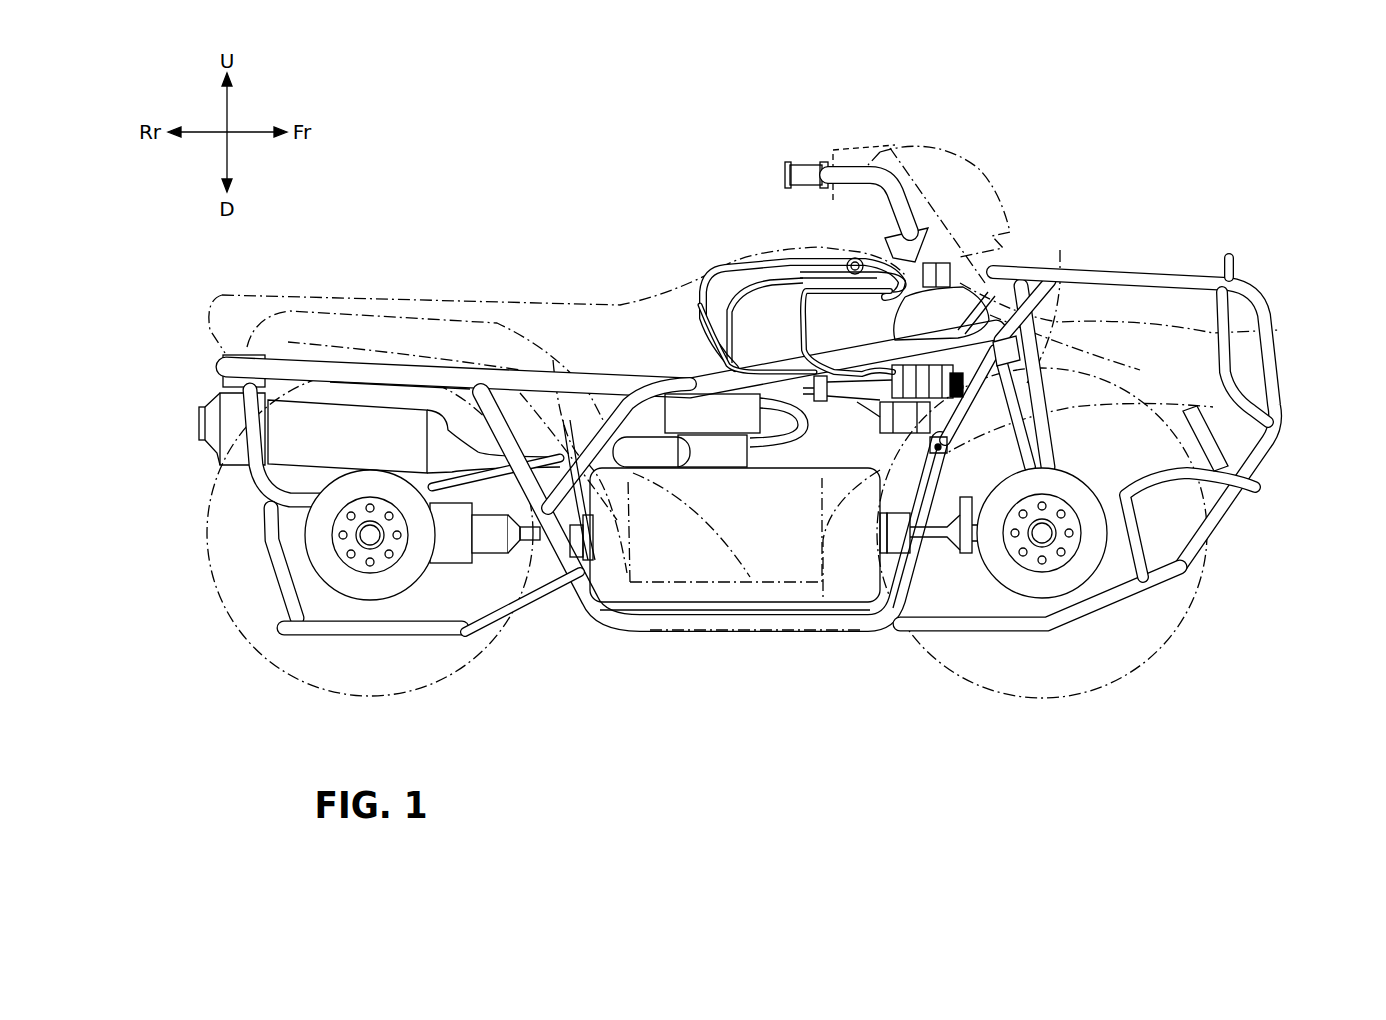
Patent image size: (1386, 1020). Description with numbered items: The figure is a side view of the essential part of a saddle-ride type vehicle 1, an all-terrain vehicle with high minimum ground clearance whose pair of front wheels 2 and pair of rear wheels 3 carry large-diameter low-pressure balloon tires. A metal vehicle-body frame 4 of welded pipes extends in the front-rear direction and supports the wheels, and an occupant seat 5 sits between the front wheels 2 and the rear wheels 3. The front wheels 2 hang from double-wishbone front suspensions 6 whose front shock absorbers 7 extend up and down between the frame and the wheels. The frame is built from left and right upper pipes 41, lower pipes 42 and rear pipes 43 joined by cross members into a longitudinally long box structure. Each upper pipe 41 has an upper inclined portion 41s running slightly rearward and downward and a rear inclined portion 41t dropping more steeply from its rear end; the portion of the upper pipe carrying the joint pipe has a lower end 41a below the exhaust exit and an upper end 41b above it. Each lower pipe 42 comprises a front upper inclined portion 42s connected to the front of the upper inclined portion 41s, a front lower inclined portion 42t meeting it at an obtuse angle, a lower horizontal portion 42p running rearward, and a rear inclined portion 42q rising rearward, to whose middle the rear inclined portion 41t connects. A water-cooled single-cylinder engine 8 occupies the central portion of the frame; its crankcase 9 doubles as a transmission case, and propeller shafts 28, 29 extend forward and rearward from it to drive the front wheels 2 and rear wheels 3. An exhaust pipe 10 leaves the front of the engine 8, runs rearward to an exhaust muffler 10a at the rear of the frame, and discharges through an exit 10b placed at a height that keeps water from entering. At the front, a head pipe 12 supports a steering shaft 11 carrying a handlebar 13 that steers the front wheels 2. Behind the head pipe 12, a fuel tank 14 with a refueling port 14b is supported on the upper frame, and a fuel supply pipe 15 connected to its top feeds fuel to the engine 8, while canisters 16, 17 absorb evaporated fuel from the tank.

The saddle-ride type vehicle 1 is at (1131, 142).
The front wheels 2 is at (1163, 643).
The rear wheels 3 is at (226, 606).
The vehicle-body frame 4 is at (606, 368).
The occupant seat 5 is at (473, 300).
The front suspensions 6 is at (1058, 447).
The front shock absorbers 7 is at (1040, 415).
The engine 8 is at (775, 530).
The crankcase 9 is at (803, 600).
The exhaust pipe 10 is at (530, 456).
The exhaust muffler 10a is at (357, 405).
The exit 10b is at (200, 418).
The steering shaft 11 is at (965, 232).
The head pipe 12 is at (950, 282).
The handlebar 13 is at (797, 160).
The fuel tank 14 is at (773, 313).
The refueling port 14b is at (960, 267).
The fuel supply pipe 15 is at (720, 270).
The canister 16 is at (962, 400).
The canister 17 is at (862, 575).
The propeller shaft 28 is at (945, 465).
The propeller shaft 29 is at (530, 525).
The upper pipe 41 is at (838, 336).
The lower end 41a is at (585, 545).
The upper end 41b is at (990, 287).
The upper inclined portion 41s is at (703, 377).
The rear inclined portion 41t is at (560, 420).
The lower pipe 42 is at (652, 642).
The lower horizontal portion 42p is at (707, 625).
The rear inclined portion 42q is at (560, 560).
The front upper inclined portion 42s is at (1262, 400).
The front lower inclined portion 42t is at (915, 617).
The rear pipe 43 is at (413, 372).